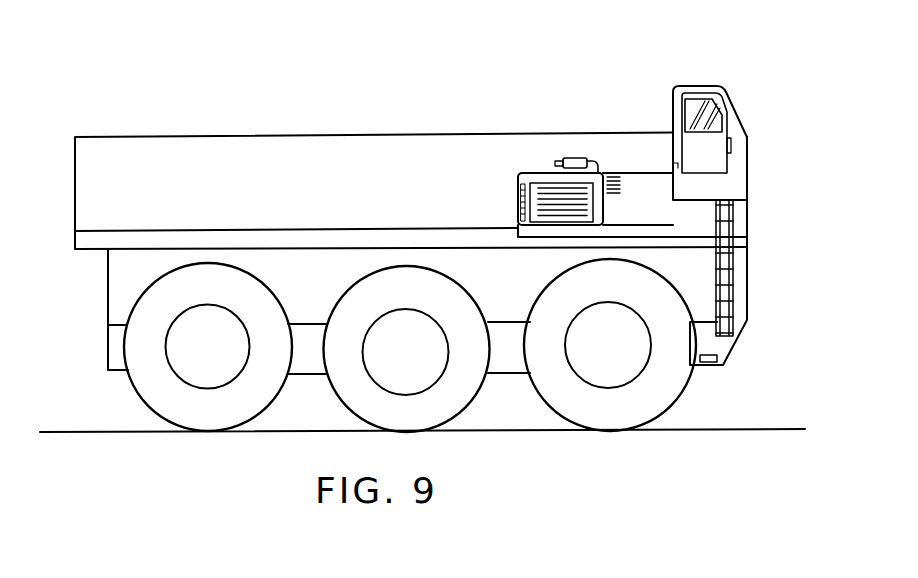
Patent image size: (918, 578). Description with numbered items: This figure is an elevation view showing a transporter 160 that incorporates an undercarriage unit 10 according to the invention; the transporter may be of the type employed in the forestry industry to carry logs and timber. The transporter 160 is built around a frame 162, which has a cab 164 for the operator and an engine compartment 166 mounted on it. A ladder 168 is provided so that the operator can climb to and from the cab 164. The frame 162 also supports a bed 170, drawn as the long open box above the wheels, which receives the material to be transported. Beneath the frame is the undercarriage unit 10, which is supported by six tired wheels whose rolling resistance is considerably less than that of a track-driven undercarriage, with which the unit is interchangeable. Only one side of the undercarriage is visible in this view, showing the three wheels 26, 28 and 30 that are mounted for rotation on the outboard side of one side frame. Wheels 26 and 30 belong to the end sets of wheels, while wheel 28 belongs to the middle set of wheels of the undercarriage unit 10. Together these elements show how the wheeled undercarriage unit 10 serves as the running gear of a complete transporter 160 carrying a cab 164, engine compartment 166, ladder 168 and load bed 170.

The transporter 160 is at (497, 80).
The bed 170 is at (343, 150).
The frame 162 is at (127, 285).
The undercarriage unit 10 is at (305, 385).
The engine compartment 166 is at (550, 192).
The cab 164 is at (732, 128).
The ladder 168 is at (733, 288).
The wheel 26 is at (150, 388).
The wheel 28 is at (457, 393).
The wheel 30 is at (658, 388).